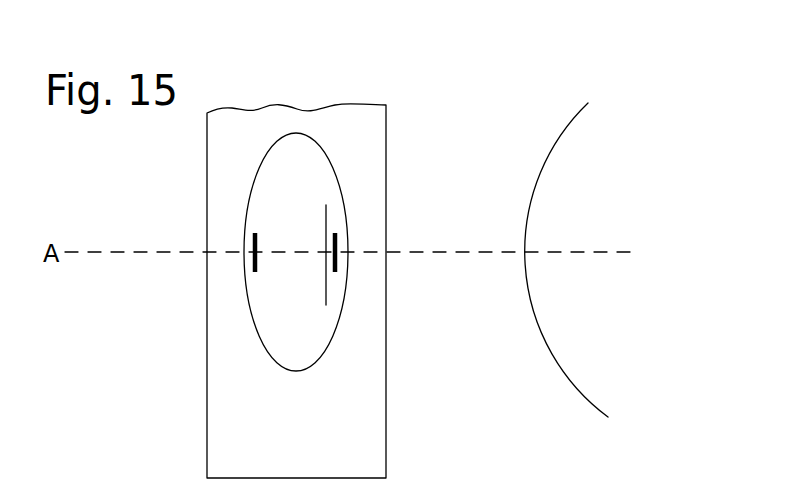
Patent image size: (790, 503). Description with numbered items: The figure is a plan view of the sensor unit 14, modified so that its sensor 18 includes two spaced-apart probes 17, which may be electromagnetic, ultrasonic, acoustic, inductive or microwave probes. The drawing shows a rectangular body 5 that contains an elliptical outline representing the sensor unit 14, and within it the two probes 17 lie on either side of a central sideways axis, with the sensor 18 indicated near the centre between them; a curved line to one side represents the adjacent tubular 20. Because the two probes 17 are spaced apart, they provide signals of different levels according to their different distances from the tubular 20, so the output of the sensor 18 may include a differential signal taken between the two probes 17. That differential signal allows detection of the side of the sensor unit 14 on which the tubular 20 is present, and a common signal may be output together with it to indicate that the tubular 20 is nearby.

The substrate / carrier 5 is at (372, 432).
The sensor unit 14 is at (258, 333).
The electromagnetic probe 17 is at (253, 257).
The sensor 18 is at (323, 215).
The tubular 20 is at (530, 190).